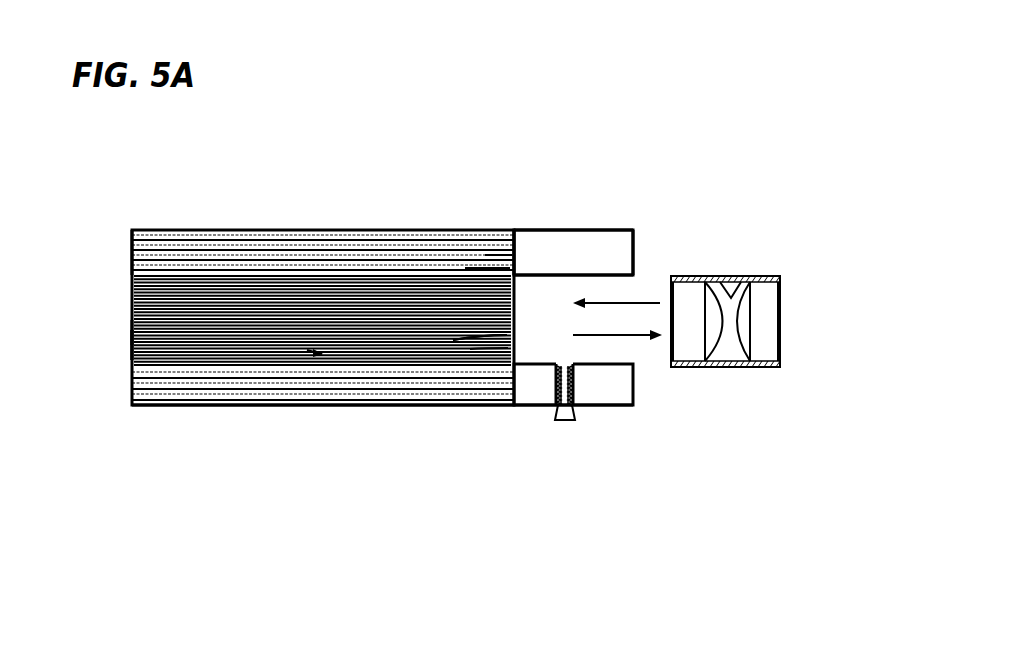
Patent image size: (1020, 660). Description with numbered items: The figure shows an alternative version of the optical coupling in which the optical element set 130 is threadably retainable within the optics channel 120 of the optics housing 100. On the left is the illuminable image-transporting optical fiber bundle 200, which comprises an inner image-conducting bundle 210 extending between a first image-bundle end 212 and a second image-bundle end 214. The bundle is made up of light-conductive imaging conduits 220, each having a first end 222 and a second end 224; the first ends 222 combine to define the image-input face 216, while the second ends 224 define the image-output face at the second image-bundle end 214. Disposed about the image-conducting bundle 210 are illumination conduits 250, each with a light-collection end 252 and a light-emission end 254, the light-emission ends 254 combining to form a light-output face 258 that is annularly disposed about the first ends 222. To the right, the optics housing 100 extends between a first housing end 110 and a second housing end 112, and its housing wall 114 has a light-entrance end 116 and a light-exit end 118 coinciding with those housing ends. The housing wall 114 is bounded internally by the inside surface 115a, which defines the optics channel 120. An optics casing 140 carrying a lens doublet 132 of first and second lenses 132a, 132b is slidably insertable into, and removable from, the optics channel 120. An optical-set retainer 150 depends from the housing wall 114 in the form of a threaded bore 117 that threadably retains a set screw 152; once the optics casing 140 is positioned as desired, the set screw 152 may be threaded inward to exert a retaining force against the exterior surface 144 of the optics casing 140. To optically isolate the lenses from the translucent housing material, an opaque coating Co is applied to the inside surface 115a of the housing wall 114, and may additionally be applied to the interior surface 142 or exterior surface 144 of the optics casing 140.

The optics housing 100 is at (577, 335).
The first housing end 110 is at (514, 230).
The second housing end 112 is at (617, 232).
The housing wall 114 is at (603, 246).
The light-entrance end 116 is at (513, 231).
The threaded bore 117 is at (560, 359).
The light-exit end 118 is at (634, 248).
The optics channel 120 is at (554, 285).
The inside surface 115a is at (593, 374).
The optical element set 130 is at (773, 350).
The lens doublet 132 is at (757, 340).
The first lens 132a is at (763, 325).
The second lens 132b is at (688, 370).
The optics casing 140 is at (780, 280).
The interior surface 142 is at (737, 279).
The exterior surface 144 is at (723, 277).
The optical-set retainer 150 is at (566, 432).
The set screw 152 is at (544, 508).
The illuminable image-transporting optical fiber bundle 200 is at (361, 199).
The image-conducting bundle 210 is at (288, 345).
The first image-bundle end 212 is at (470, 349).
The second image-bundle end 214 is at (131, 341).
The image-input face 216 is at (433, 401).
The imaging conduit 220 is at (312, 352).
The first end of imaging conduit 222 is at (453, 340).
The second end of imaging conduit 224 is at (131, 350).
The illumination conduit 250 is at (264, 238).
The light-collection end 252 is at (131, 237).
The light-emission end 254 is at (480, 268).
The light-output face 258 is at (500, 255).
The opaque coating Co is at (769, 351).